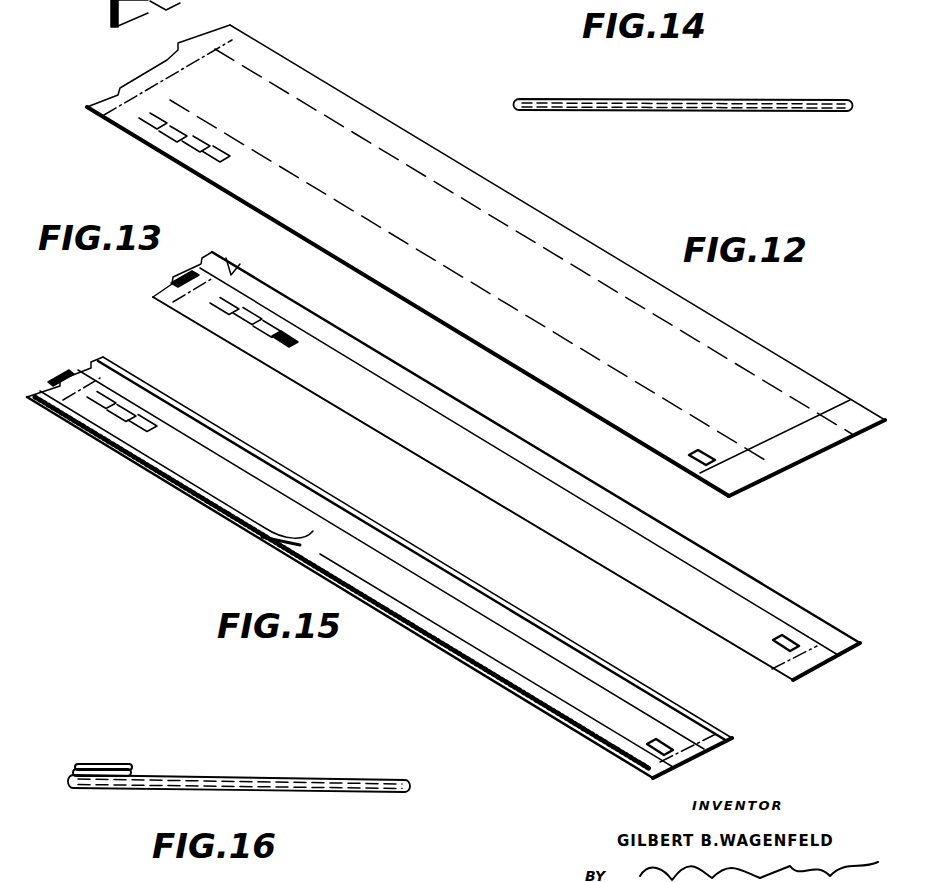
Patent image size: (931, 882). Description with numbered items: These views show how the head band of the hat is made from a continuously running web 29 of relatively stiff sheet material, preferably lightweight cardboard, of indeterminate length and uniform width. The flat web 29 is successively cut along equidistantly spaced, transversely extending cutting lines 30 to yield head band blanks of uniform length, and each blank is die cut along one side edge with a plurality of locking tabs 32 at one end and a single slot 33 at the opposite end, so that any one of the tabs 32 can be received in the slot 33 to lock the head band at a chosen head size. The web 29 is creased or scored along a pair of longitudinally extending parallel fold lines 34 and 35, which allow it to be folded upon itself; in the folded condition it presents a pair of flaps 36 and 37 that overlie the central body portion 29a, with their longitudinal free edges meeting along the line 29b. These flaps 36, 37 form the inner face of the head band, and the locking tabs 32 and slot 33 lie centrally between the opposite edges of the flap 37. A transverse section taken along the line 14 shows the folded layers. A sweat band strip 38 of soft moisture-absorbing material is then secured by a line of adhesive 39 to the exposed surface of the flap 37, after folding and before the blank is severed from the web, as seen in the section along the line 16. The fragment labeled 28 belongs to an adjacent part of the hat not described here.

In FIG. 13, the section line 14— 14 is at (863, 602).
In FIG. 13, the section line 16— 16 is at (301, 440).
In FIG. 15, the section line 16— 16 is at (168, 508).
In FIG. 12, the channel member 28 is at (170, 5).
In FIG. 12, the web 29 is at (343, 108).
In FIG. 14, the web 29 is at (850, 101).
In FIG. 16, the web 29 is at (160, 789).
In FIG. 12, the central body portion 29a is at (410, 200).
In FIG. 14, the central body portion 29a is at (677, 112).
In FIG. 16, the central body portion 29a is at (260, 789).
In FIG. 13, the line 29b is at (508, 455).
In FIG. 15, the line 29b is at (355, 540).
In FIG. 16, the line 29b is at (300, 778).
In FIG. 12, the cutting lines 30 is at (190, 77).
In FIG. 13, the cutting lines 30 is at (230, 270).
In FIG. 15, the cutting lines 30 is at (102, 358).
In FIG. 12, the locking tabs 32 is at (200, 157).
In FIG. 13, the locking tabs 32 is at (275, 338).
In FIG. 15, the locking tabs 32 is at (150, 440).
In FIG. 12, the slot 33 is at (687, 462).
In FIG. 13, the slot 33 is at (775, 640).
In FIG. 15, the slot 33 is at (655, 736).
In FIG. 12, the fold line 34 is at (534, 240).
In FIG. 16, the fold line 34 is at (410, 786).
In FIG. 12, the fold line 35 is at (575, 338).
In FIG. 16, the fold line 35 is at (72, 786).
In FIG. 12, the flap 36 is at (667, 306).
In FIG. 13, the flap 36 is at (667, 538).
In FIG. 15, the flap 36 is at (440, 572).
In FIG. 16, the flap 36 is at (388, 781).
In FIG. 12, the flap 37 is at (408, 298).
In FIG. 15, the flap 37 is at (427, 613).
In FIG. 16, the flap 37 is at (205, 776).
In FIG. 15, the sweat band strip 38 is at (207, 497).
In FIG. 16, the sweat band strip 38 is at (104, 764).
In FIG. 15, the line of adhesive 39 is at (503, 690).
In FIG. 16, the line of adhesive 39 is at (125, 768).